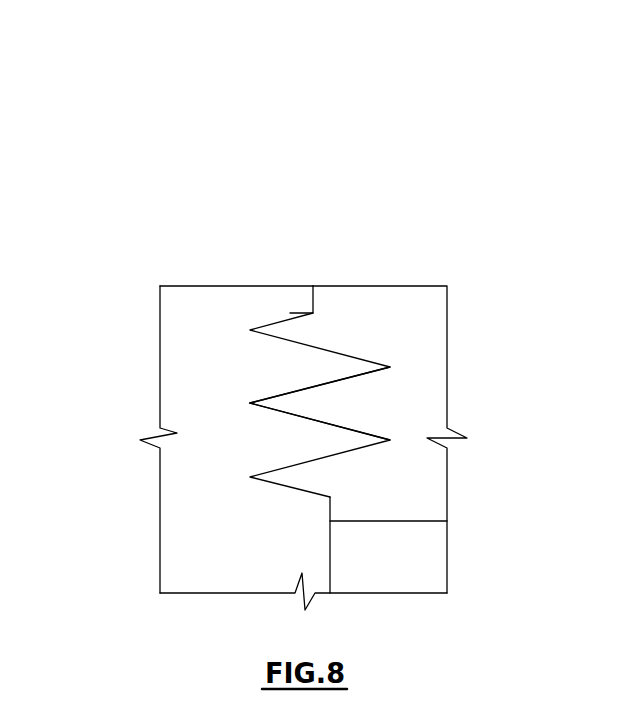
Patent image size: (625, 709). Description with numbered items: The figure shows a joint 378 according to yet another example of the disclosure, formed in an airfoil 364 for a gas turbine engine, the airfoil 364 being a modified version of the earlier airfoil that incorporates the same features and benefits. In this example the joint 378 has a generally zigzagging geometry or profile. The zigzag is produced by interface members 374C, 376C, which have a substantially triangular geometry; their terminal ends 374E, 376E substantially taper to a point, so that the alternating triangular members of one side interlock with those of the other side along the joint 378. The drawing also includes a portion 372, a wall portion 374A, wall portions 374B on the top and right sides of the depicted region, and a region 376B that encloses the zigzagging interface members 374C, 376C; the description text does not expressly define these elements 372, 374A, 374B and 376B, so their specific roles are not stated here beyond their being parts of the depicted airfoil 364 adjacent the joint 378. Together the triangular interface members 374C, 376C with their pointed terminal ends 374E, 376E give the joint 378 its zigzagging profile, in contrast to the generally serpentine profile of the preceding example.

The airfoil 364 is at (156, 190).
The structure 372 is at (433, 555).
The wall 374A is at (177, 530).
The wall 374B is at (256, 276).
The interface member 374C is at (373, 433).
The terminal end 374E is at (378, 440).
The zigzag structure 376B is at (375, 256).
The interface member 376C is at (302, 402).
The terminal end 376E is at (260, 328).
The joint 378 is at (290, 313).